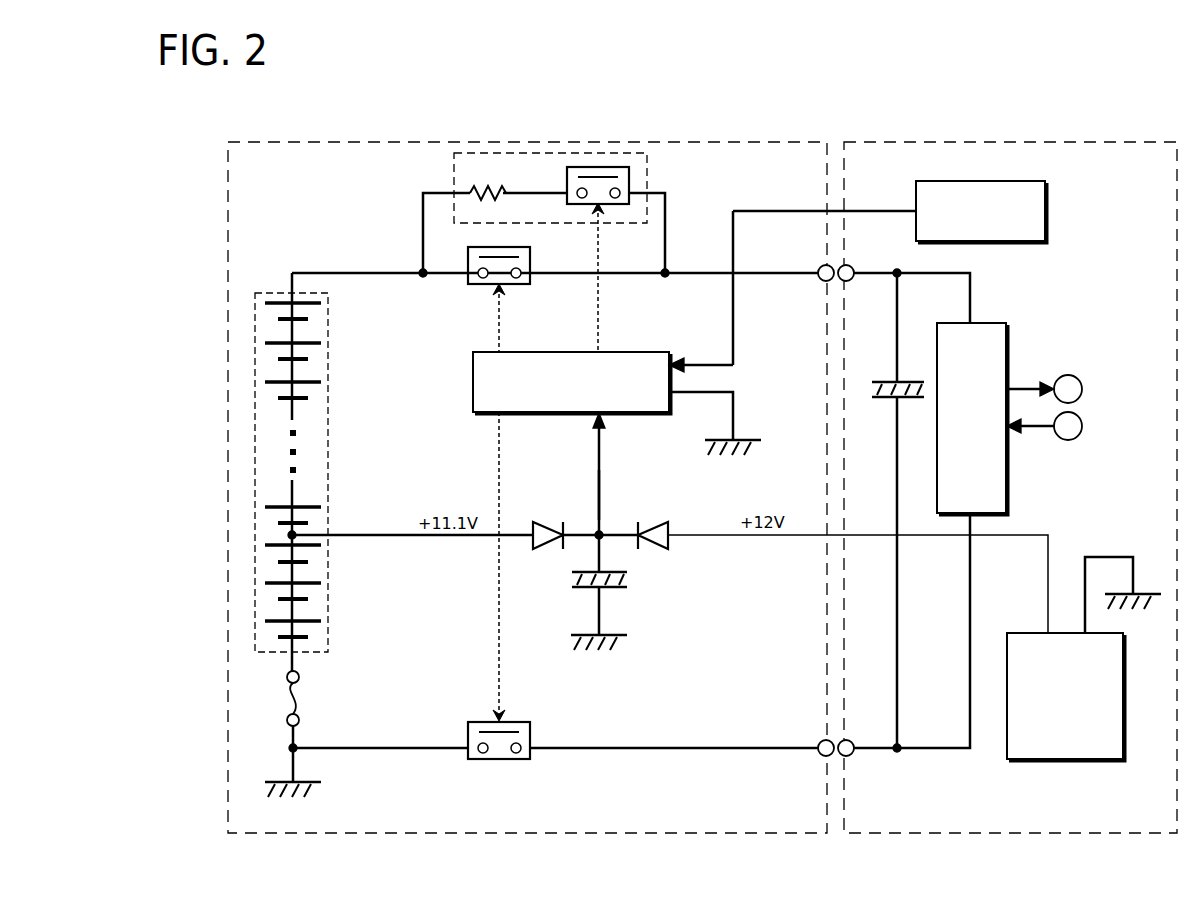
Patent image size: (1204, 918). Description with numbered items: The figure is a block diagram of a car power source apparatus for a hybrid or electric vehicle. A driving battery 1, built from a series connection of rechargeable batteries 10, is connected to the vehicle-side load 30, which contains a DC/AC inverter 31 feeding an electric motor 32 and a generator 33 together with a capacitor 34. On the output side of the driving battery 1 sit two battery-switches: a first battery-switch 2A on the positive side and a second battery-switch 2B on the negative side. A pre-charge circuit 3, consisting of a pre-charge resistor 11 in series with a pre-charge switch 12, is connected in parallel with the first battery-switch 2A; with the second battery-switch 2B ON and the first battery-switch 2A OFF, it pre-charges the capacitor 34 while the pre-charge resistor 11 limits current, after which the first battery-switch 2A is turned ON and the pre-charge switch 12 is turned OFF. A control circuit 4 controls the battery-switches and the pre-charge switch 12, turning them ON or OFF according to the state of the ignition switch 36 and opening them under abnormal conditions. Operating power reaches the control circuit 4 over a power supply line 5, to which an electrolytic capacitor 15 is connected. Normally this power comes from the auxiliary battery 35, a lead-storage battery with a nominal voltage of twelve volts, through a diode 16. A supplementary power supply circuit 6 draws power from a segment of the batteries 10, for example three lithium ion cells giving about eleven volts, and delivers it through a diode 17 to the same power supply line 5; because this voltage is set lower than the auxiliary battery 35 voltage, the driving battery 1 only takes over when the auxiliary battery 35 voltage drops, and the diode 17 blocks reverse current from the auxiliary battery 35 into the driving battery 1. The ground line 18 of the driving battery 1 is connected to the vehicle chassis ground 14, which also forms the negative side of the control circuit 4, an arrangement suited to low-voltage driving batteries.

The driving battery 1 is at (255, 472).
The first battery-switch 2A is at (475, 290).
The second battery-switch 2B is at (532, 737).
The pre-charge circuit 3 is at (540, 154).
The control circuit 4 is at (660, 351).
The power supply line 5 is at (602, 468).
The supplementary power supply circuit 6 is at (390, 500).
The batteries 10 is at (275, 343).
The pre-charge resistor 11 is at (478, 185).
The pre-charge switch 12 is at (600, 167).
The chassis ground 14 is at (278, 782).
The electrolytic capacitor 15 is at (620, 566).
The diode 16 is at (650, 522).
The diode 17 is at (548, 522).
The ground line 18 is at (293, 660).
The vehicle-side load 30 is at (1042, 306).
The DC/AC inverter 31 is at (1010, 467).
The electric motor 32 is at (1082, 376).
The generator 33 is at (1083, 428).
The capacitor 34 is at (910, 378).
The auxiliary battery 35 is at (1053, 762).
The ignition switch 36 is at (1049, 207).